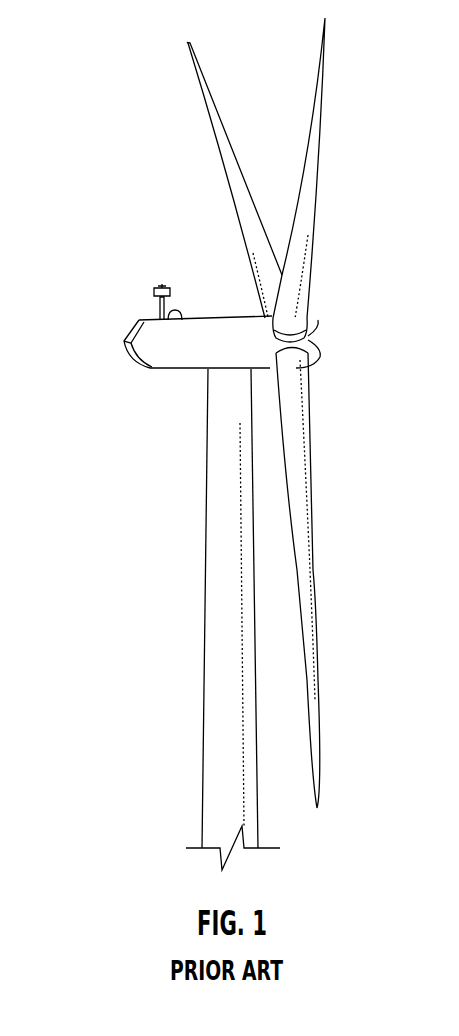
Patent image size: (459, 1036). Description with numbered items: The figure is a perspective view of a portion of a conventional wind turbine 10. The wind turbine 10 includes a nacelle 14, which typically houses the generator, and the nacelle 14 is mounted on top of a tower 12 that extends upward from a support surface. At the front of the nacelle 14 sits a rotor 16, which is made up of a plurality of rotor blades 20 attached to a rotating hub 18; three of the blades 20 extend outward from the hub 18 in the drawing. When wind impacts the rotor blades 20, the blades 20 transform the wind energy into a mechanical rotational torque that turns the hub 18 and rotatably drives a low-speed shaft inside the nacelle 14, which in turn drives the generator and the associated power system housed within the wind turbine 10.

The wind turbine 10 is at (103, 127).
The tower 12 is at (205, 660).
The nacelle 14 is at (173, 370).
The rotor 16 is at (336, 337).
The rotating hub 18 is at (322, 348).
The rotor blades 20 is at (238, 157).